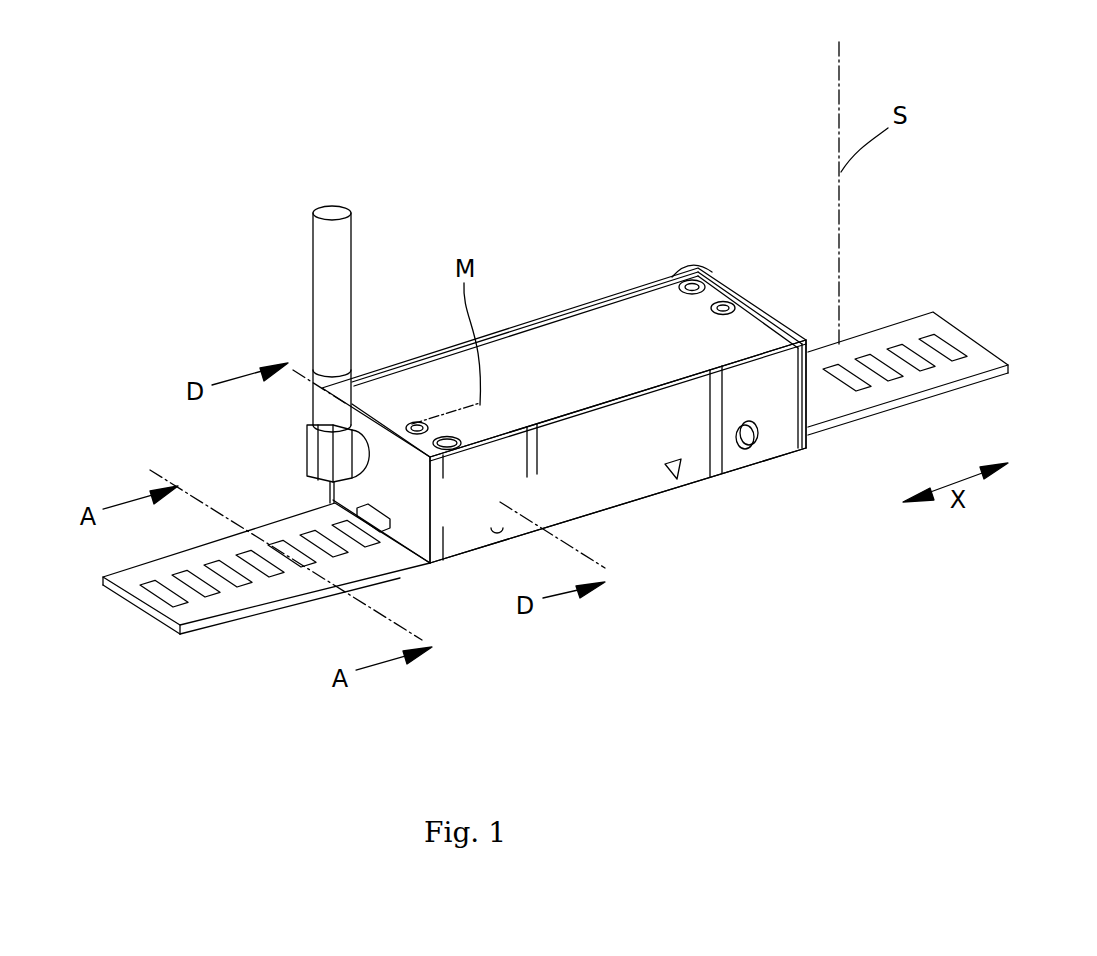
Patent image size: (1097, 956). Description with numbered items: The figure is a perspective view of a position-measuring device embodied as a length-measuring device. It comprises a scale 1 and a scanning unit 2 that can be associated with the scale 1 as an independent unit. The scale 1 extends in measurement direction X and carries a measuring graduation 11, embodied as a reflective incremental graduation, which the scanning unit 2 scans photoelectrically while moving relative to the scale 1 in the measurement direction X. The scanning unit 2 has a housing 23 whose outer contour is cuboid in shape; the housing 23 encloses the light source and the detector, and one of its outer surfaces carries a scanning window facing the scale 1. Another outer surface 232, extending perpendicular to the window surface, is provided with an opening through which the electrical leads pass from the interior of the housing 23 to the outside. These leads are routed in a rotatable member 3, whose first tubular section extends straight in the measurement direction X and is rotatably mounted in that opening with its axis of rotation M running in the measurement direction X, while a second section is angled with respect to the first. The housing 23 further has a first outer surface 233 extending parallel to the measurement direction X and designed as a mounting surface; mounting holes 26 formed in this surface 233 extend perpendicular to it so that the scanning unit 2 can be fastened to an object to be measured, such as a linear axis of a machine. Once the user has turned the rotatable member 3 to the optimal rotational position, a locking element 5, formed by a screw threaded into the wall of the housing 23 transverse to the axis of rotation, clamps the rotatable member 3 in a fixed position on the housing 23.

The scale 1 is at (996, 362).
The scanning unit 2 is at (582, 404).
The rotatable member 3 is at (310, 440).
The locking element 5 is at (417, 423).
The measuring graduation 11 is at (940, 332).
The housing 23 is at (574, 305).
The mounting holes 26 is at (692, 278).
The outer surface 232 is at (440, 562).
The first outer surface 233 is at (628, 487).